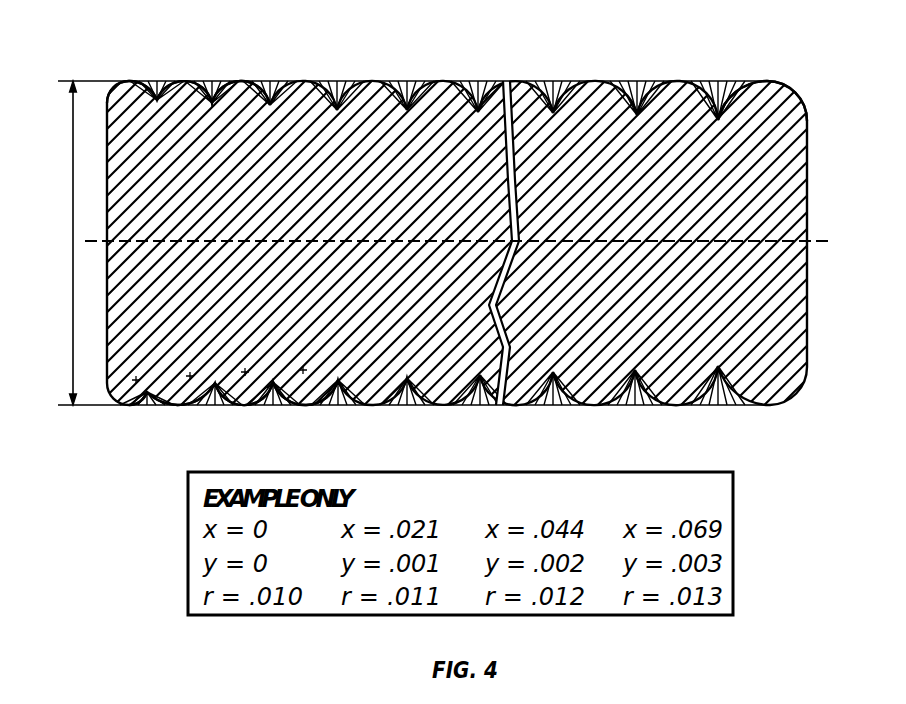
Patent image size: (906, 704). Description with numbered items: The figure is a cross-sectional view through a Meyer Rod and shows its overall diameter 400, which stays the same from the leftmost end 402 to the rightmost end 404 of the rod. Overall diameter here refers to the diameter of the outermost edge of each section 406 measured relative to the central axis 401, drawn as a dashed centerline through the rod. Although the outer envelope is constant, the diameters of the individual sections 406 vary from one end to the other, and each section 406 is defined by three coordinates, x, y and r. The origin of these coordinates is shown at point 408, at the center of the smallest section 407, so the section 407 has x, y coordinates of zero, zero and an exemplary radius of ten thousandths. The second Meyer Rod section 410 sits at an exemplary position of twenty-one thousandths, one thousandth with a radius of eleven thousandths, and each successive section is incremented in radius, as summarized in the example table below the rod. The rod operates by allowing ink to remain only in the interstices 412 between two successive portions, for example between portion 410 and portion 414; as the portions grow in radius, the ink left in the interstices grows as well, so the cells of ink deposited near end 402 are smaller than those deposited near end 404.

The overall diameter 400 is at (73, 240).
The central axis 401 is at (657, 241).
The leftmost end 402 is at (132, 81).
The rightmost end 404 is at (764, 80).
The sections 406 is at (192, 81).
The smallest section 407 is at (125, 407).
The origin point 408 is at (146, 391).
The second Meyer Rod section 410 is at (188, 407).
The interstices 412 is at (213, 407).
The Meyer Rod portion 414 is at (271, 407).